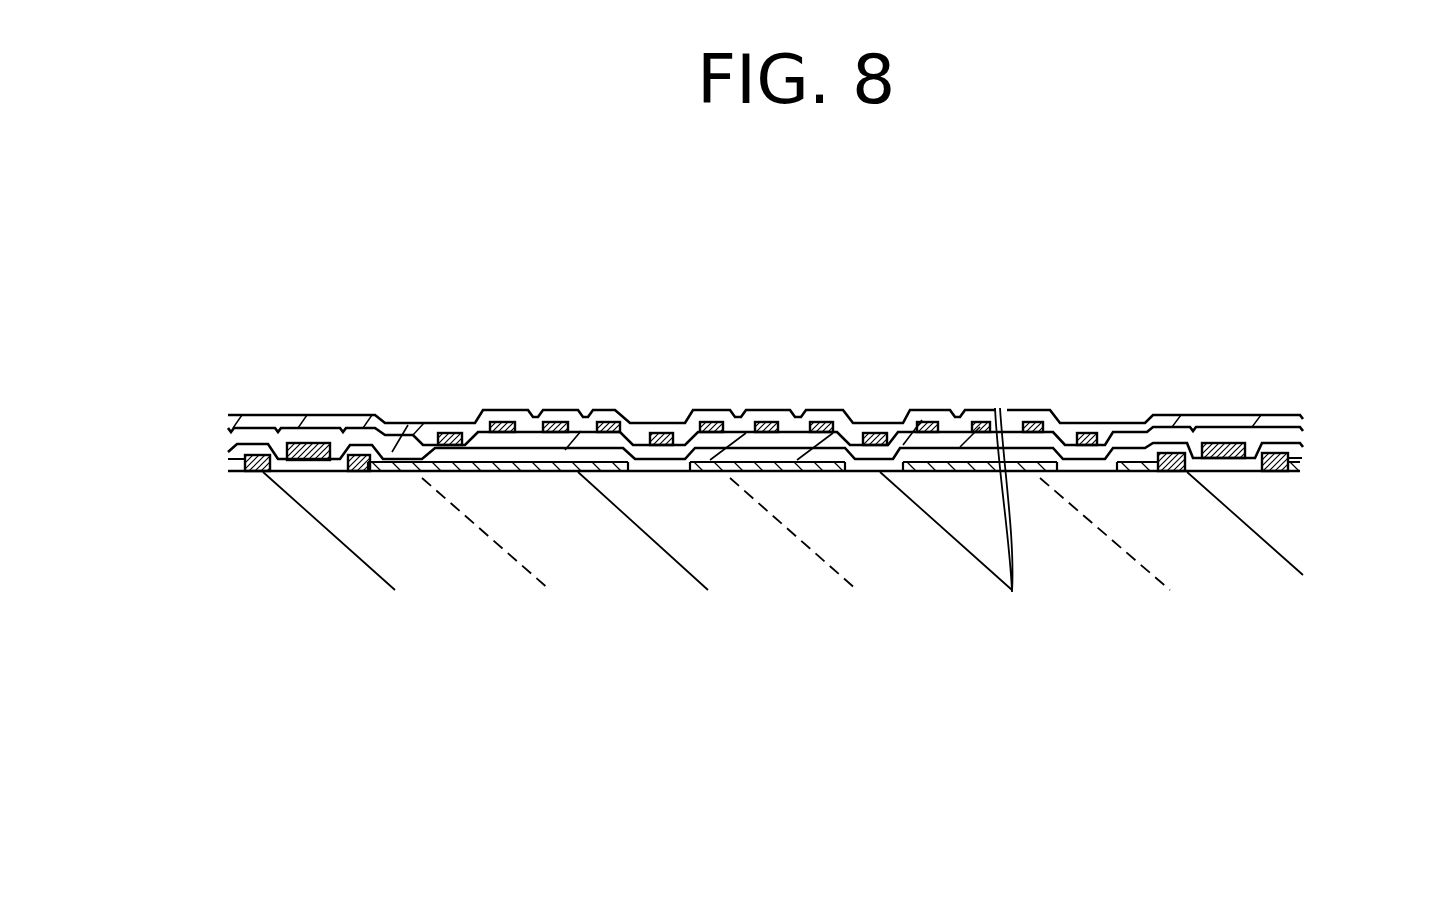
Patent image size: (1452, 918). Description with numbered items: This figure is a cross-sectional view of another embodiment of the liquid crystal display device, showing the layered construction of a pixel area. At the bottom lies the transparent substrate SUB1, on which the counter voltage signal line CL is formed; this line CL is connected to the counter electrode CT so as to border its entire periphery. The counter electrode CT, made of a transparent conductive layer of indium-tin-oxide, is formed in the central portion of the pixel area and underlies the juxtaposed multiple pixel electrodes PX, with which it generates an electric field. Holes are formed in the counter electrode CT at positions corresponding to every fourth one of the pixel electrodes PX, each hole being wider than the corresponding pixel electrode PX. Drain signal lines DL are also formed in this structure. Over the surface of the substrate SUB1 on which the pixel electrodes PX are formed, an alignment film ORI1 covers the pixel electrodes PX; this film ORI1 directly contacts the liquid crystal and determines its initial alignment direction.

The drain signal line DL is at (290, 442).
The pixel electrode PX is at (452, 433).
The alignment film ORI1 is at (1208, 414).
The counter voltage signal line CL is at (353, 472).
The transparent substrate SUB1 is at (1280, 521).
The counter electrode CT is at (822, 466).